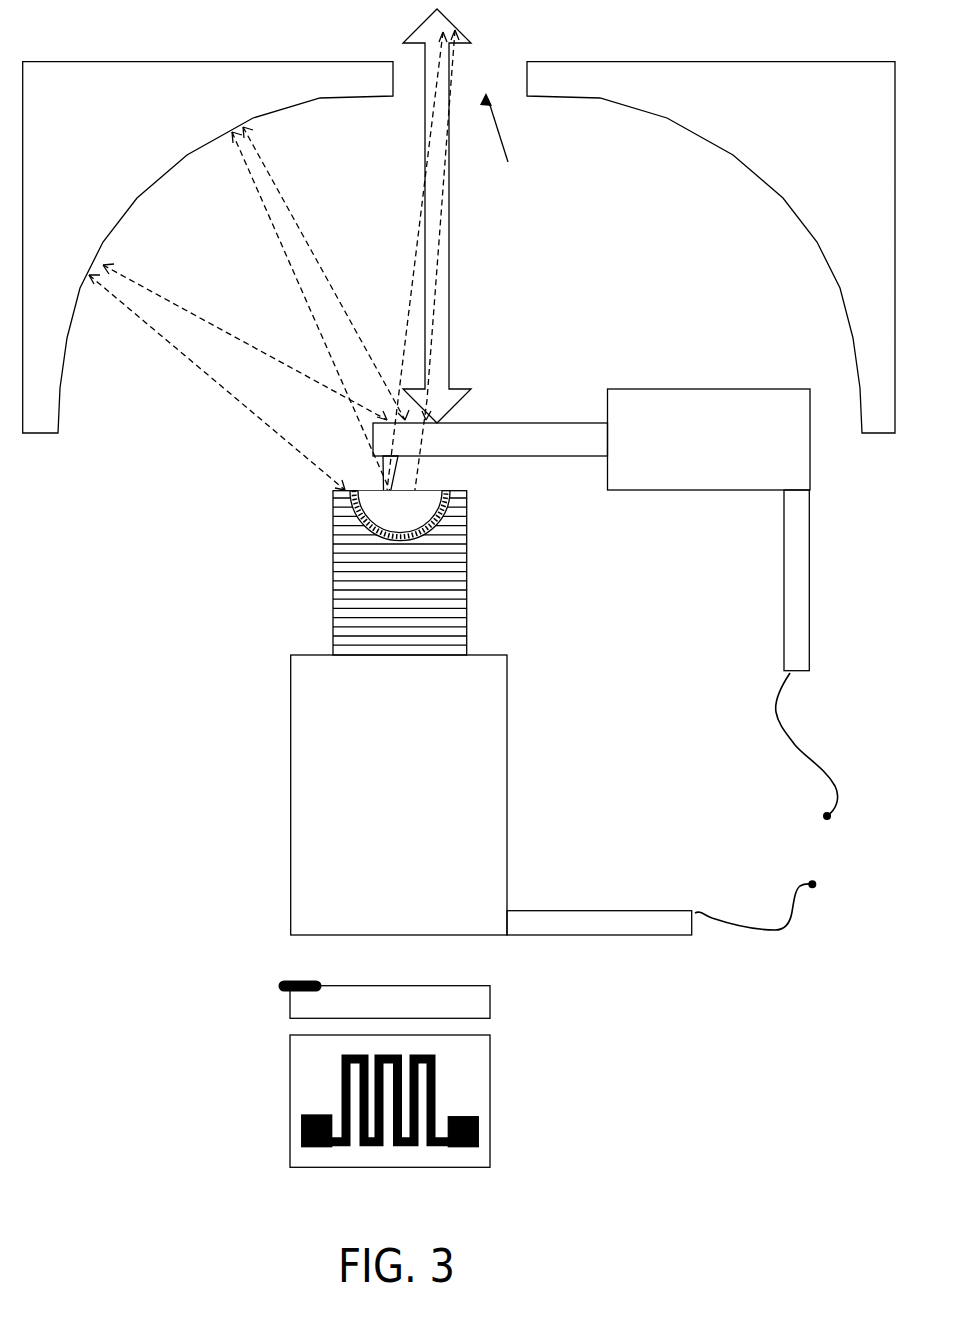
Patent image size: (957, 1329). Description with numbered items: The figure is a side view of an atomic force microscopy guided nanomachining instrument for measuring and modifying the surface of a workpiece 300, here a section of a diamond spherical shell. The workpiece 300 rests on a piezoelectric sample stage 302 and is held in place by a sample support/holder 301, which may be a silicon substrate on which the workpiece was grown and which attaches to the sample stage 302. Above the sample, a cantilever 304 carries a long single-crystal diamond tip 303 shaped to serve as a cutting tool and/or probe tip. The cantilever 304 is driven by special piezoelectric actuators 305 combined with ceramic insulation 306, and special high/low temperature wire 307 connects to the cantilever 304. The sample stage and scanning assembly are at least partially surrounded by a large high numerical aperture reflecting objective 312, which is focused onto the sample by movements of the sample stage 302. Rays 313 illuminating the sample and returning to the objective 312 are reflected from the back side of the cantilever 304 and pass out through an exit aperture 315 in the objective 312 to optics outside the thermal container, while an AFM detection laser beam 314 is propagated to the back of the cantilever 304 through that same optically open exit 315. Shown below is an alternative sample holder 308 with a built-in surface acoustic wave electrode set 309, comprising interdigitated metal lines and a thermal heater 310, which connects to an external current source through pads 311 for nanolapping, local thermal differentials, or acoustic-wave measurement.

The workpiece 300 is at (452, 502).
The sample support/holder 301 is at (467, 572).
The piezoelectric sample stage 302 is at (291, 797).
The tip 303 is at (398, 473).
The cantilever 304 is at (541, 423).
The piezoelectric actuators 305 is at (712, 388).
The ceramic insulation 306 is at (788, 555).
The high/low temperature wire 307 is at (802, 755).
The alternative sample holder 308 is at (442, 1077).
The surface acoustic wave electrode set 309 is at (278, 987).
The thermal heater 310 is at (340, 1105).
The pads 311 is at (467, 1147).
The reflecting objective 312 is at (122, 120).
The rays 313 is at (191, 359).
The AFM detection laser beam 314 is at (449, 361).
The exit aperture 315 is at (504, 146).